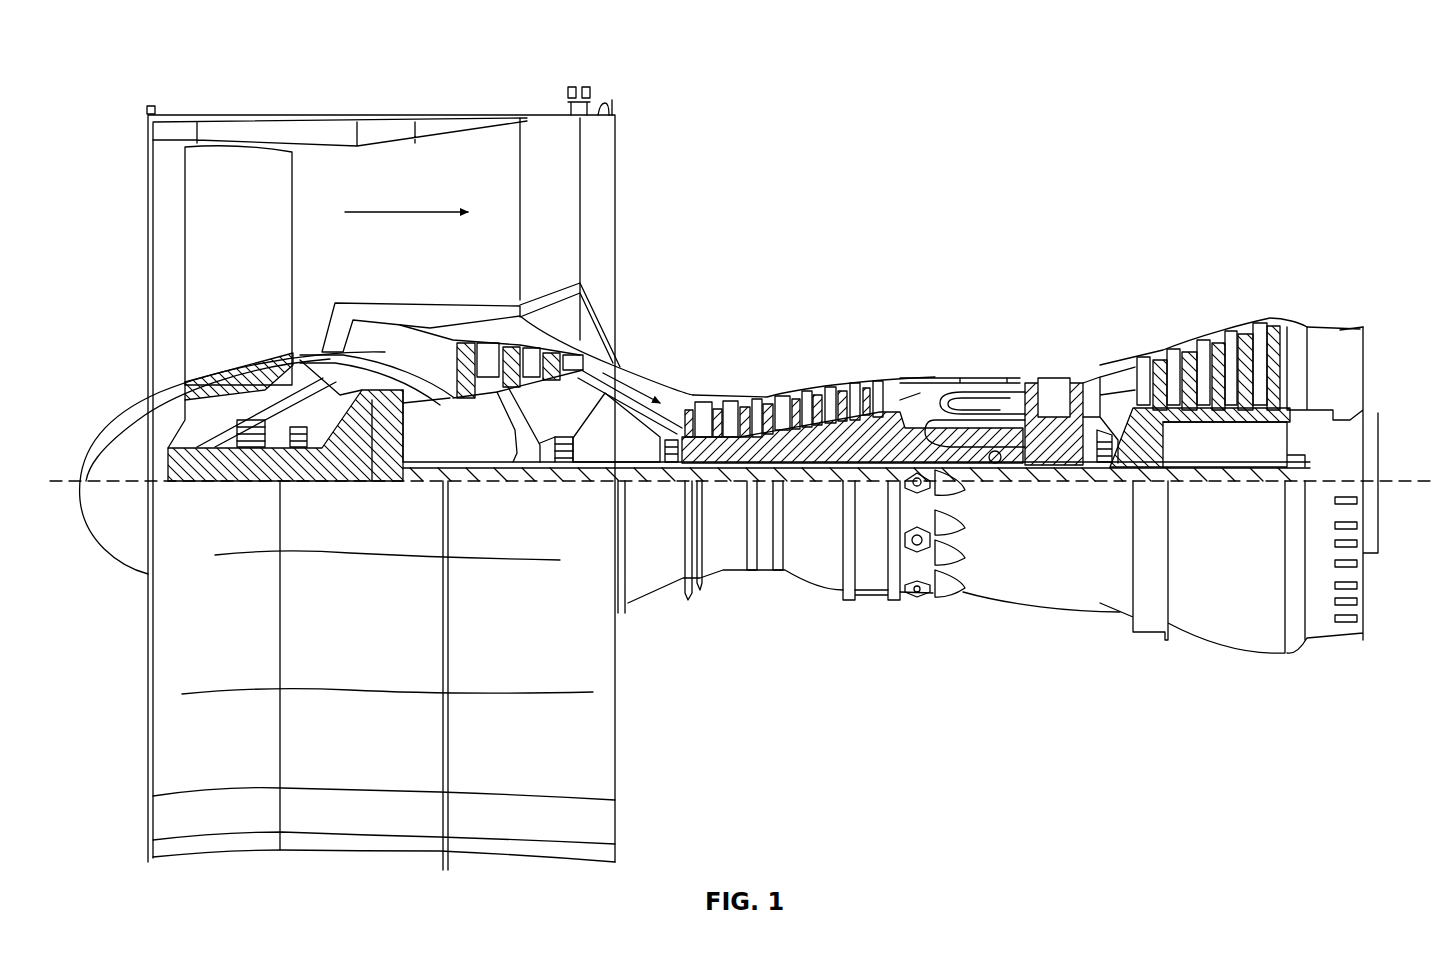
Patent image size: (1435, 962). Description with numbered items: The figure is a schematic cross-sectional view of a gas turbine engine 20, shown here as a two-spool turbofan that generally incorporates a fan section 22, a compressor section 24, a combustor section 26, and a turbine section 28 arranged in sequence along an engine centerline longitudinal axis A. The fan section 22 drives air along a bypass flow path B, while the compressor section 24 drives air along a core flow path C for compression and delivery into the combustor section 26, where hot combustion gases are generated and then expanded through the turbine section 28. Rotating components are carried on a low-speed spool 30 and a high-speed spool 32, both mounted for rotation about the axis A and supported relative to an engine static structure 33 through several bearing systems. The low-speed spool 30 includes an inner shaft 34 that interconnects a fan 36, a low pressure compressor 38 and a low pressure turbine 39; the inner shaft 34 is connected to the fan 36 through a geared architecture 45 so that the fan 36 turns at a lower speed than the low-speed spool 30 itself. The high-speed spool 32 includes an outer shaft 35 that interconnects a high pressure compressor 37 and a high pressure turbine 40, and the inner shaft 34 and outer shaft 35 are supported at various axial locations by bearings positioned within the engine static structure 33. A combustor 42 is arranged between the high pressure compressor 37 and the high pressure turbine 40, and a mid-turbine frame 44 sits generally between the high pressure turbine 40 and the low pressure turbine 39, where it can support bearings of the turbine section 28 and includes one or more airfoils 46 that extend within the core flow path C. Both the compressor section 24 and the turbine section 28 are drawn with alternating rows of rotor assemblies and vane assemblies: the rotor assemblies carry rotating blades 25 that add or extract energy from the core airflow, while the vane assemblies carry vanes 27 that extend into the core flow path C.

The gas turbine engine 20 is at (1185, 152).
The fan section 22 is at (390, 68).
The compressor section 24 is at (805, 300).
The rotating blades 25 is at (466, 352).
The combustor section 26 is at (1018, 282).
The vanes 27 is at (490, 348).
The turbine section 28 is at (1258, 246).
The low-speed spool 30 is at (838, 485).
The high-speed spool 32 is at (888, 430).
The engine static structure 33 is at (877, 600).
The inner shaft 34 is at (630, 481).
The outer shaft 35 is at (997, 462).
The fan 36 is at (262, 235).
The high pressure compressor 37 is at (768, 428).
The low pressure compressor 38 is at (525, 348).
The low pressure turbine 39 is at (1217, 340).
The high pressure turbine 40 is at (1055, 385).
The combustor 42 is at (975, 398).
The mid-turbine frame 44 is at (1100, 368).
The geared architecture 45 is at (385, 448).
The airfoils 46 is at (1095, 395).
The engine centerline longitudinal axis A is at (1420, 481).